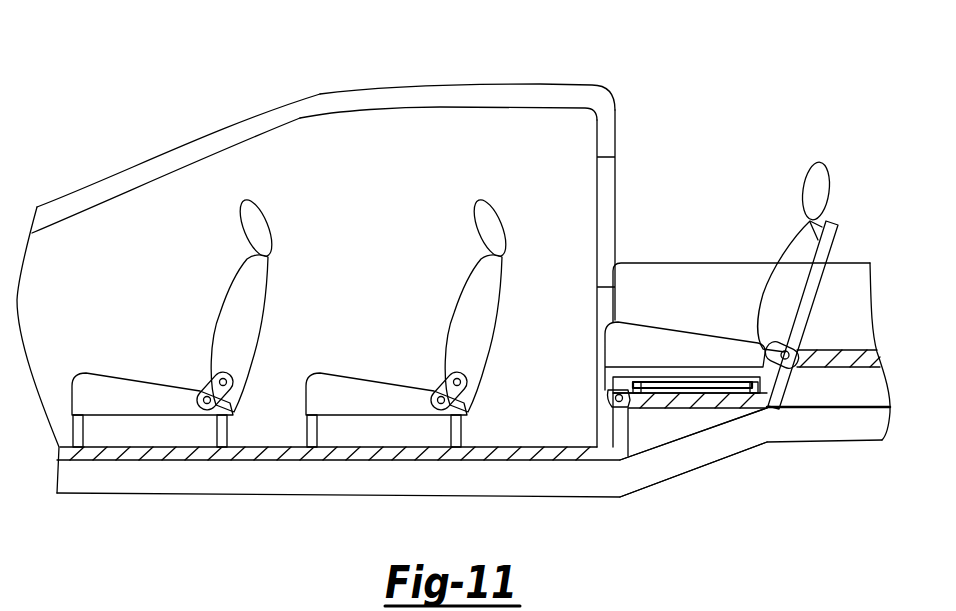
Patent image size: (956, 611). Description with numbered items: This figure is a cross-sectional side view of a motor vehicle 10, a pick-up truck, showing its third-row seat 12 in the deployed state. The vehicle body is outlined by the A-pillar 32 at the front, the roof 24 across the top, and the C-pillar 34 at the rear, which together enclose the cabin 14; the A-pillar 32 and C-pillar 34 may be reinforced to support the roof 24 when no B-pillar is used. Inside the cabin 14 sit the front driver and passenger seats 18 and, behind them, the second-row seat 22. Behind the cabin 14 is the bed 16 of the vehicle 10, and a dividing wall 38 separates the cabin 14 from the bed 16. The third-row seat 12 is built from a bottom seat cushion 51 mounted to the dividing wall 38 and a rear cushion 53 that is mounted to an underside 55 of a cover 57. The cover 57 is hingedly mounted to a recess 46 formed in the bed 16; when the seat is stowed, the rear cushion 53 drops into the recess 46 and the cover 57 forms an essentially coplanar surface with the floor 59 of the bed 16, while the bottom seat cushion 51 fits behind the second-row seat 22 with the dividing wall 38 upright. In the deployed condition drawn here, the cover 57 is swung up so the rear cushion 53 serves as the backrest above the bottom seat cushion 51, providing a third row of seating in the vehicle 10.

The motor vehicle 10 is at (449, 263).
The third-row seat 12 is at (757, 284).
The cabin 14 is at (292, 315).
The bed 16 is at (845, 318).
The front driver and passenger seats 18 is at (218, 313).
The second-row seat 22 is at (452, 313).
The roof 24 is at (483, 88).
The A-pillar 32 is at (225, 125).
The C-pillar 34 is at (621, 150).
The dividing wall 38 is at (744, 410).
The recess 46 is at (691, 410).
The bottom seat cushion 51 is at (652, 327).
The rear cushion 53 is at (790, 243).
The underside 55 is at (801, 179).
The cover 57 is at (825, 277).
The floor 59 is at (830, 366).